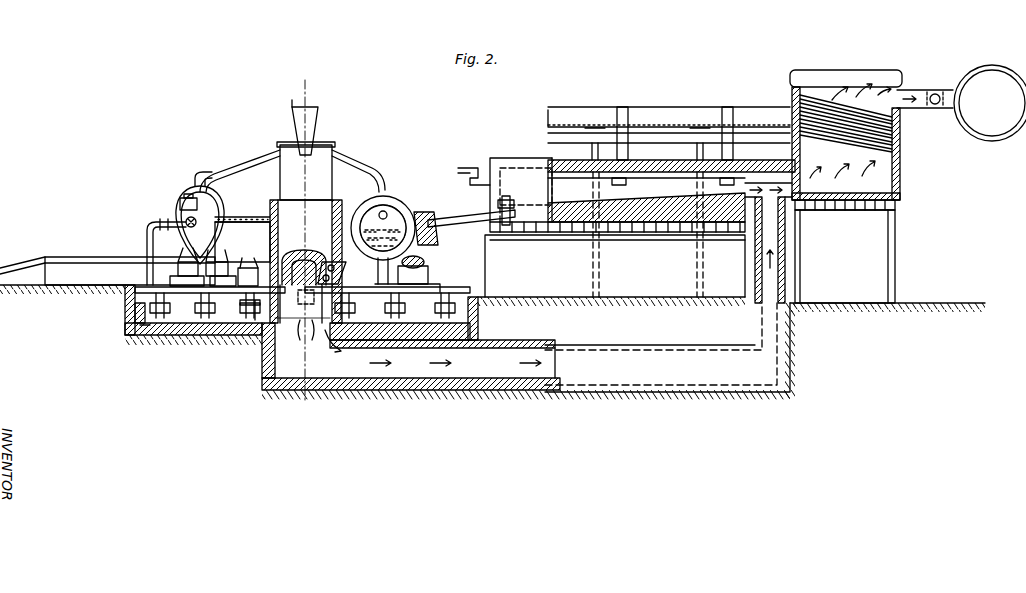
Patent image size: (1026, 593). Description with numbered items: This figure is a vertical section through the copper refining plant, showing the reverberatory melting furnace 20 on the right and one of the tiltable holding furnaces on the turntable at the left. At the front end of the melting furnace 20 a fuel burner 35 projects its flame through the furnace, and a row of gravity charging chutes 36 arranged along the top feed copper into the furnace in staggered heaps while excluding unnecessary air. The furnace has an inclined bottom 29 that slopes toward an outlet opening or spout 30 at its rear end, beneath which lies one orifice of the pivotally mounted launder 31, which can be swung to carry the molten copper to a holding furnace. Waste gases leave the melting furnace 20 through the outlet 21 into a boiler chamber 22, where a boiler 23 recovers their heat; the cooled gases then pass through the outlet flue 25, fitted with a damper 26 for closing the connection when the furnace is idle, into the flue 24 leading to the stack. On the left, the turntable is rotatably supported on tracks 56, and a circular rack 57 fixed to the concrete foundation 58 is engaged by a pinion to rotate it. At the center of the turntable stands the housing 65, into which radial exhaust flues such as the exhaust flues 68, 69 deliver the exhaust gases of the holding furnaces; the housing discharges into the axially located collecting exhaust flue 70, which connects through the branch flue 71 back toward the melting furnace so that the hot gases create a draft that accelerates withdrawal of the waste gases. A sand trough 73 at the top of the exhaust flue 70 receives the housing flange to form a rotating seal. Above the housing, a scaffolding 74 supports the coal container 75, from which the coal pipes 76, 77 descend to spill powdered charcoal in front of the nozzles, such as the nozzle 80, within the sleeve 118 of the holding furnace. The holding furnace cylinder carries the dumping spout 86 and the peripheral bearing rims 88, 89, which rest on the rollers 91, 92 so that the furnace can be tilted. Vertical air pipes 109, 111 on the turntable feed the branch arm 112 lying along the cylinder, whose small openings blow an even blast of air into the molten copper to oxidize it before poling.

The reverberatory melting furnace 20 is at (533, 176).
The outlet 21 is at (800, 212).
The boiler chamber 22 is at (860, 150).
The boiler 23 is at (815, 100).
The flue 24 is at (990, 103).
The outlet flue 25 is at (920, 92).
The damper 26 is at (936, 106).
The inclined bottom 29 is at (627, 240).
The outlet opening or spout 30 is at (515, 200).
The pivotally mounted launder 31 is at (462, 226).
The fuel burner 35 is at (482, 184).
The gravity charging chutes 36 is at (630, 120).
The tracks 56 is at (150, 328).
The circular rack 57 is at (135, 310).
The concrete foundation 58 is at (180, 330).
The housing 65 is at (310, 256).
The exhaust flue 68 is at (304, 277).
The exhaust flue 69 is at (230, 300).
The collecting exhaust flue 70 is at (262, 366).
The branch flue 71 is at (560, 347).
The sand trough 73 is at (266, 332).
The scaffolding 74 is at (281, 178).
The coal container 75 is at (315, 111).
The coal pipe 76 is at (355, 175).
The coal pipe 77 is at (272, 160).
The nozzle 80 is at (180, 204).
The dumping spout 86 is at (432, 238).
The peripheral bearing rim 88 is at (400, 205).
The peripheral bearing rim 89 is at (212, 192).
The roller 91 is at (418, 270).
The roller 92 is at (190, 256).
The vertical air pipe 109 is at (102, 262).
The vertical air pipe 111 is at (147, 240).
The branch arm 112 is at (200, 225).
The sleeve 118 is at (222, 215).